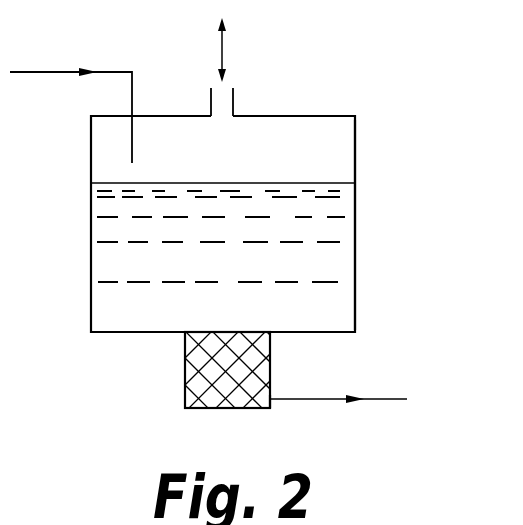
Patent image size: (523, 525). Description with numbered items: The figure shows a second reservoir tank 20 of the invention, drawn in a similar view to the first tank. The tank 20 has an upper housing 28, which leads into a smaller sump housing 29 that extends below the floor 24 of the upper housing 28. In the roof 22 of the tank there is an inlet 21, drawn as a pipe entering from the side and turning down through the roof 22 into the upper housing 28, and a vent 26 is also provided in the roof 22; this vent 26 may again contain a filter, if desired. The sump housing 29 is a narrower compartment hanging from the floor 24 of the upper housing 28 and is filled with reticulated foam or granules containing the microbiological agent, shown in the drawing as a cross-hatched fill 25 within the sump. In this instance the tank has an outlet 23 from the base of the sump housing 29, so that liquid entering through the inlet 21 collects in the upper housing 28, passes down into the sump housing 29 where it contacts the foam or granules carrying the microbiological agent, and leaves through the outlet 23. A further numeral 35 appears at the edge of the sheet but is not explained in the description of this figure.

The tank 20 is at (221, 235).
The inlet 21 is at (133, 97).
The roof 22 is at (322, 116).
The outlet 23 is at (271, 404).
The floor 24 is at (323, 333).
The filter media 25 is at (205, 352).
The vent 26 is at (236, 100).
The upper housing 28 is at (356, 152).
The sump housing 29 is at (186, 378).
The component 35 is at (2, 498).